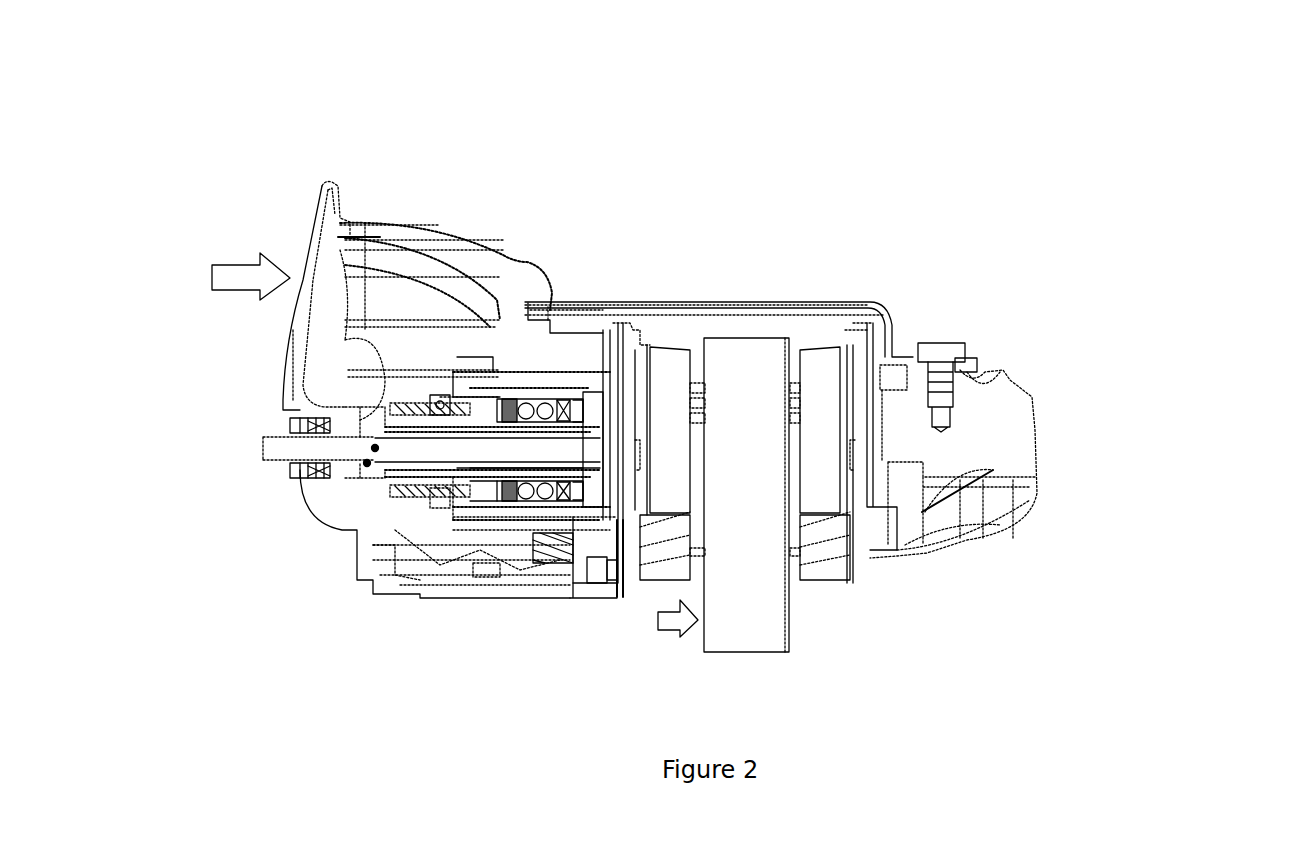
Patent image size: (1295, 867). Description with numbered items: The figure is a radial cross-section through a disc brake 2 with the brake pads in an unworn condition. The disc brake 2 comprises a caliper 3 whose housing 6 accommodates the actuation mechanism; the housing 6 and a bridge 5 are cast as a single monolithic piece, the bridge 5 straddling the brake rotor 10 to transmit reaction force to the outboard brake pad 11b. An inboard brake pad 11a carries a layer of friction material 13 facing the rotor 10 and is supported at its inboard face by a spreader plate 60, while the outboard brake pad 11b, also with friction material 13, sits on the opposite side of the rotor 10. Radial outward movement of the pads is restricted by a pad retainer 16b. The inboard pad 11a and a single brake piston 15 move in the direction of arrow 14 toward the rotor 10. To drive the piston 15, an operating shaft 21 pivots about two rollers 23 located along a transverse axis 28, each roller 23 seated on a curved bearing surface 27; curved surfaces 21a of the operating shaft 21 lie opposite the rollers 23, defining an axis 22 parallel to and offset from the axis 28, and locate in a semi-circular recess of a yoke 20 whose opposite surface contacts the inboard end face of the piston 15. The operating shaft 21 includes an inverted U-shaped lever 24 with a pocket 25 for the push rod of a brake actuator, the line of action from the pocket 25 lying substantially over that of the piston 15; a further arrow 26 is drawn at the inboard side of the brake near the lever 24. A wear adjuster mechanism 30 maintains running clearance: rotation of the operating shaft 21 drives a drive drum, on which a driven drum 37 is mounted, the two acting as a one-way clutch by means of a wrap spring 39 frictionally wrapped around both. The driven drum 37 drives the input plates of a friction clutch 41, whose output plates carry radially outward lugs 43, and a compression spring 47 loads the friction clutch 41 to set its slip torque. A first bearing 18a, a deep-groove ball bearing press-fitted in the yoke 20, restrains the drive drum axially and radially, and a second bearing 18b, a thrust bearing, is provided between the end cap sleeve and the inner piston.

The disc brake 2 is at (1003, 271).
The caliper 3 is at (968, 573).
The bridge 5 is at (1012, 400).
The housing 6 is at (460, 550).
The brake rotor 10 is at (790, 617).
The inboard brake pad 11a is at (657, 345).
The outboard brake pad 11b is at (817, 343).
The friction material 13 is at (681, 428).
The arrow 14 is at (678, 629).
The brake piston 15 is at (520, 356).
The pad retainer 16b is at (697, 313).
The first bearing 18a is at (435, 400).
The second bearing 18b is at (603, 318).
The yoke 20 is at (410, 503).
The operating shaft 21 is at (375, 418).
The curved surfaces 21a is at (403, 493).
The axis 22 is at (375, 448).
The rollers 23 is at (362, 473).
The lever 24 is at (323, 347).
The pocket 25 is at (317, 267).
The inlet flow 26 is at (208, 277).
The bearing surface 27 is at (353, 472).
The transverse axis 28 is at (367, 463).
The adjuster mechanism 30 is at (500, 518).
The driven drum 37 is at (480, 420).
The wrap spring 39 is at (457, 488).
The friction clutch 41 is at (508, 397).
The lugs 43 is at (508, 487).
The compression spring 47 is at (570, 404).
The spreader plate 60 is at (612, 577).